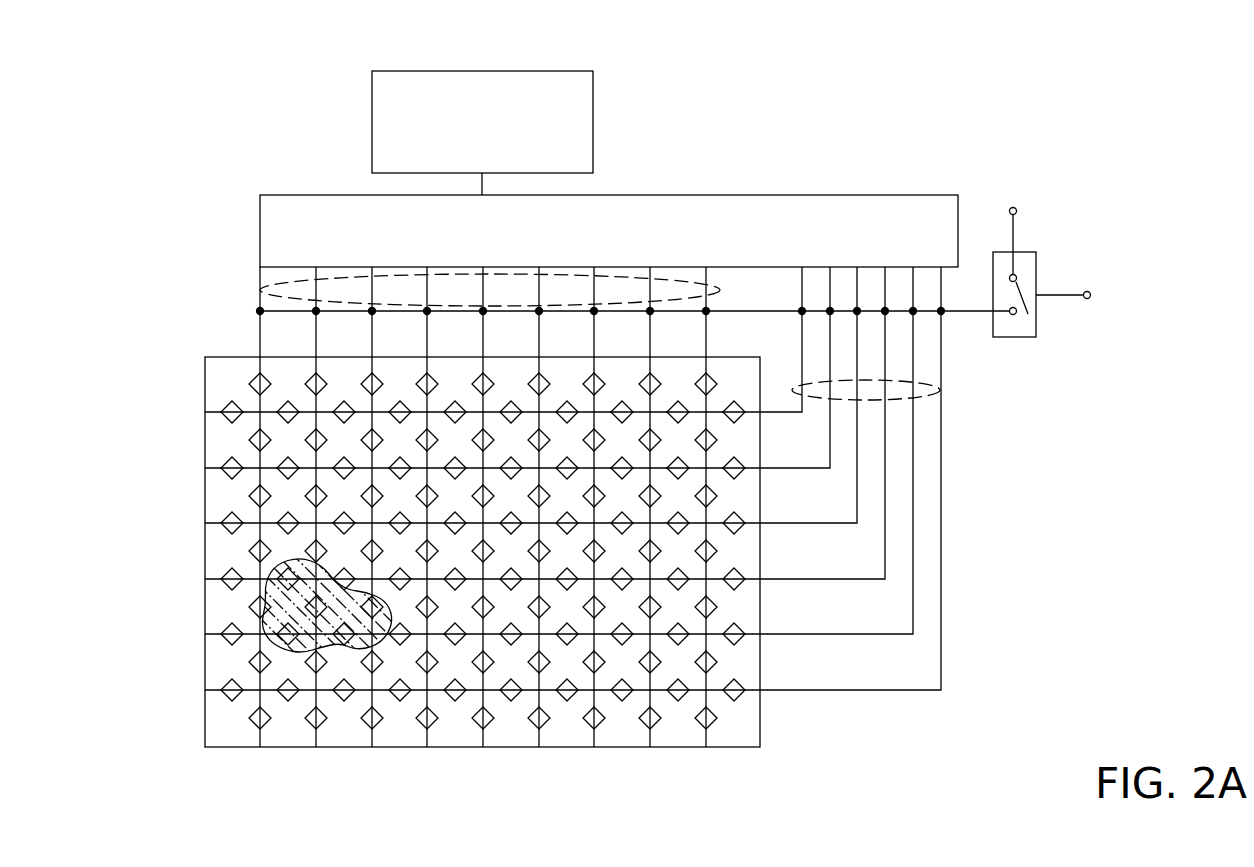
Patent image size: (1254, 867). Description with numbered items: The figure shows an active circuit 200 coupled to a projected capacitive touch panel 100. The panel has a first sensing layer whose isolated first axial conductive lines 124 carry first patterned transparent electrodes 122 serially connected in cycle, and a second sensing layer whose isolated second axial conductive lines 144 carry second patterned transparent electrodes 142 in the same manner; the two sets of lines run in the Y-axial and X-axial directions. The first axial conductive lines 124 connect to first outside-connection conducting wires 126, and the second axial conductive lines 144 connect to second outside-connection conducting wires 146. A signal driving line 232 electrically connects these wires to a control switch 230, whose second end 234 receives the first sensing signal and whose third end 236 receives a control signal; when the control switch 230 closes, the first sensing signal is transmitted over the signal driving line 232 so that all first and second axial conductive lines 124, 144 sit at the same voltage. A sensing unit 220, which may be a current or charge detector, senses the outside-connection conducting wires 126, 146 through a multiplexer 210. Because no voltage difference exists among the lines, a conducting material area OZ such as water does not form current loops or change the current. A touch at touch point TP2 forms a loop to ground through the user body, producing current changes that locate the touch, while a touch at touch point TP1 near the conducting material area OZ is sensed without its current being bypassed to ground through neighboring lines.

The active circuit 200 is at (1108, 146).
The sensing unit 220 is at (482, 133).
The multiplexer 210 is at (609, 231).
The signal driving line 232 is at (972, 314).
The control switch 230 is at (1016, 337).
The second end of the control switch 234 is at (1014, 246).
The third end of the control switch 236 is at (1058, 298).
The projected capacitive touch panel 100 is at (537, 533).
The first patterned transparent electrode 122 is at (705, 712).
The first axial conductive line 124 is at (709, 702).
The first outside-connection conducting wire 126 is at (252, 298).
The second patterned transparent electrode 142 is at (248, 420).
The second axial conductive line 144 is at (252, 420).
The second outside-connection conducting wire 146 is at (942, 388).
The conducting material area OZ is at (268, 640).
The touch point TP1 is at (332, 562).
The touch point TP2 is at (614, 488).